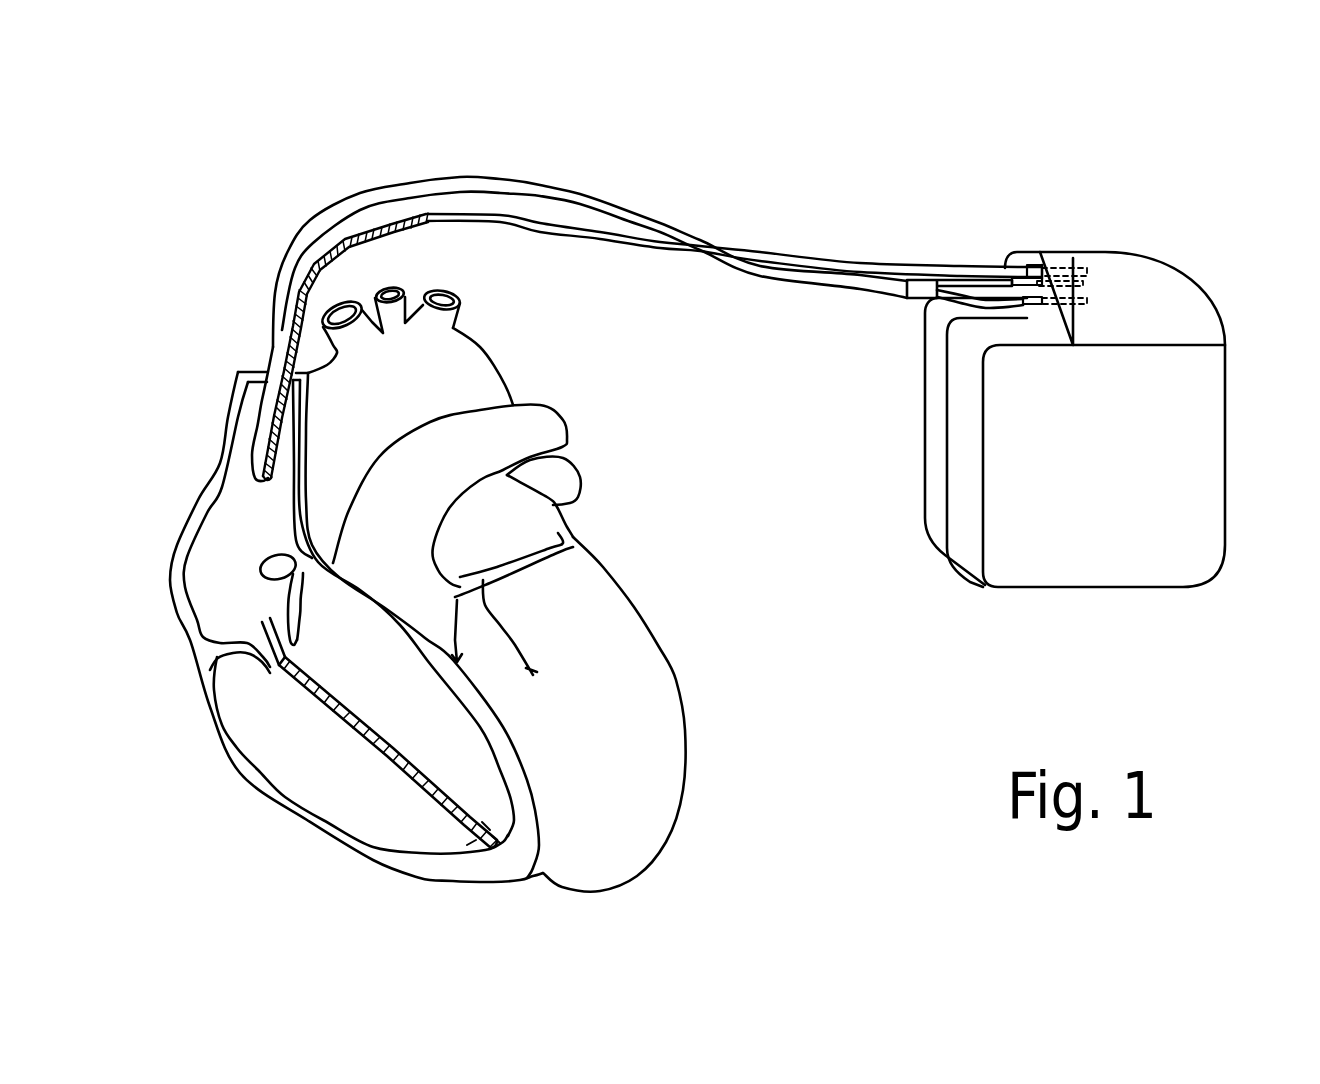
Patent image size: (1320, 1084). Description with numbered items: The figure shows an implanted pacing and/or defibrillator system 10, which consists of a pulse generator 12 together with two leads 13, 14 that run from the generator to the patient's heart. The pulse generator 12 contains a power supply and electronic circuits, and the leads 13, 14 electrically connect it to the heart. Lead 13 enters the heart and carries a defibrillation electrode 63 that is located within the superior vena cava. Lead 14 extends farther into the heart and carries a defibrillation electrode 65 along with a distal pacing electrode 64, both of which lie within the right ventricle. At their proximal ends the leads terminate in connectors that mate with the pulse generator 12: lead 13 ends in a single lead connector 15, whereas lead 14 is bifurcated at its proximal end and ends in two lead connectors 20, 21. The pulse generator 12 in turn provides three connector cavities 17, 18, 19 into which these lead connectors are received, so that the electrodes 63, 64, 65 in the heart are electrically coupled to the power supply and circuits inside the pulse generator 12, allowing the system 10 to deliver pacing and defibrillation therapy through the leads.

The pacing and/or defibrillator system 10 is at (968, 180).
The pulse generator 12 is at (1150, 460).
The lead 13 is at (900, 267).
The lead 14 is at (677, 237).
The lead connector 15 is at (1028, 280).
The connector cavity 17 is at (1065, 297).
The connector cavity 18 is at (1080, 305).
The connector cavity 19 is at (1077, 282).
The lead connector 20 is at (1077, 300).
The lead connector 21 is at (1037, 302).
The defibrillation electrode 63 is at (327, 262).
The distal pacing electrode 64 is at (497, 845).
The defibrillation electrode 65 is at (343, 727).